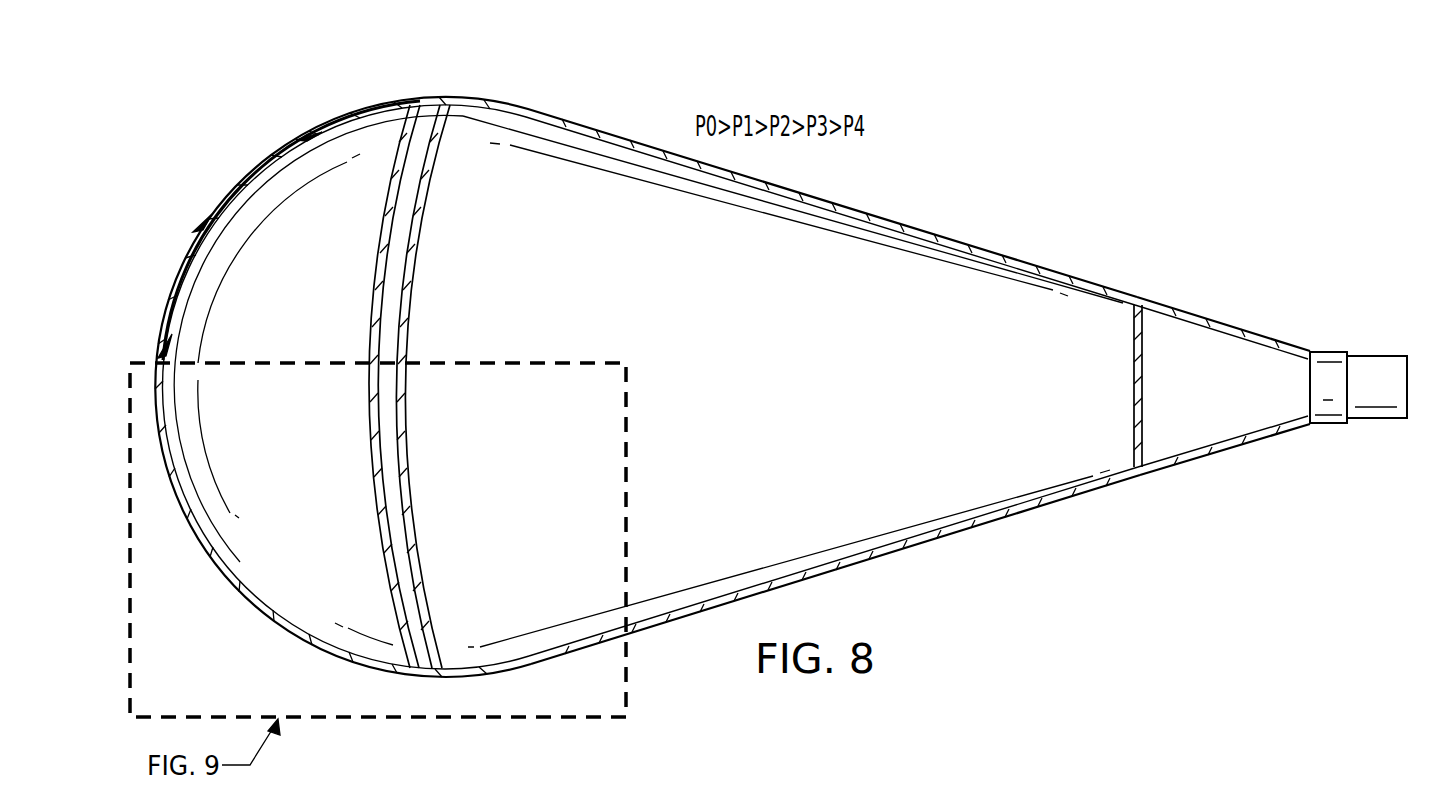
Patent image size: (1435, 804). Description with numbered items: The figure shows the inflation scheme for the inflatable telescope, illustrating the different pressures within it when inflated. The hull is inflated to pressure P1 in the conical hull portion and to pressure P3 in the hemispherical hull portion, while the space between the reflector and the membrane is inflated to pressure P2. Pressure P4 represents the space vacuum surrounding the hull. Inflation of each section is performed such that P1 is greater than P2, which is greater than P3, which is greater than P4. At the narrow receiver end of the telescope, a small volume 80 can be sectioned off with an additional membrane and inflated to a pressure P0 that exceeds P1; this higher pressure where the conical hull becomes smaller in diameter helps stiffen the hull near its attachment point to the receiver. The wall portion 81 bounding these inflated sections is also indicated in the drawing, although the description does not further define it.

The small volume 80 is at (1143, 367).
The lower sidewall rail 81 is at (981, 520).
The pressure P0 is at (1243, 402).
The pressure P1 is at (785, 402).
The pressure P2 is at (423, 140).
The pressure P3 is at (285, 402).
The pressure P4 is at (1210, 564).